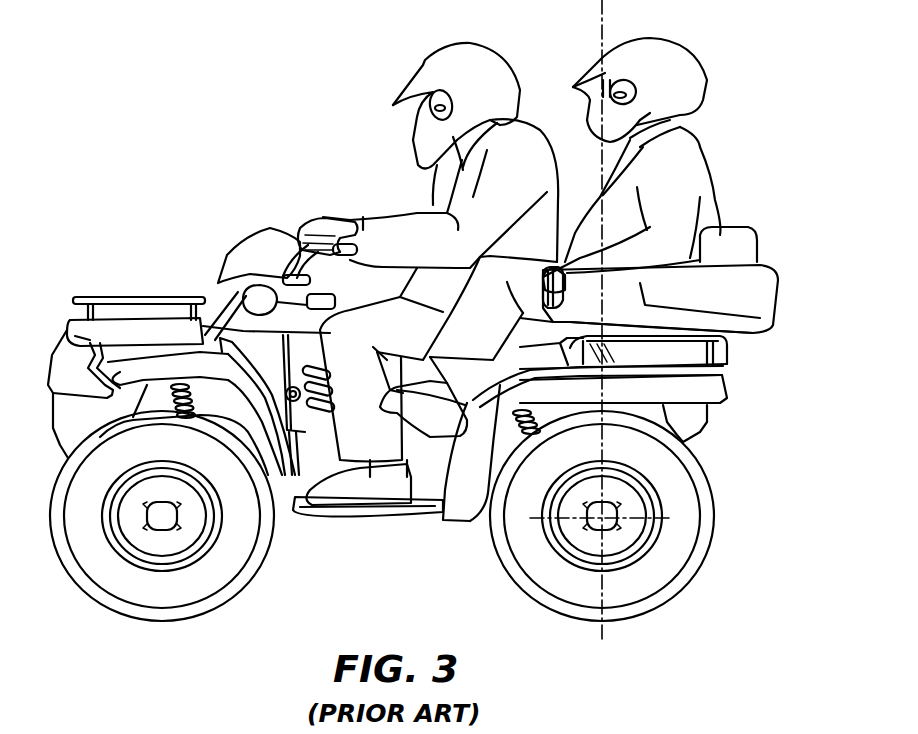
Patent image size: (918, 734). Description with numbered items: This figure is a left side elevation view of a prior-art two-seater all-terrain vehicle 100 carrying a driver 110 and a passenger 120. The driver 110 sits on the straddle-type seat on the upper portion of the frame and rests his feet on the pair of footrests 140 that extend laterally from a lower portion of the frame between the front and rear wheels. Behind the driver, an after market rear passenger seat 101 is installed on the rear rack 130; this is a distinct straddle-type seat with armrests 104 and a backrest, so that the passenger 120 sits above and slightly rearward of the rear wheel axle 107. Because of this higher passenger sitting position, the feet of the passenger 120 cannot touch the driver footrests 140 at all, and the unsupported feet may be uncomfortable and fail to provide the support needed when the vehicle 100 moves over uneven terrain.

The all-terrain vehicle 100 is at (134, 214).
The after market rear passenger seat 101 is at (760, 290).
The armrests 104 is at (780, 327).
The rear wheel axle 107 is at (603, 518).
The driver 110 is at (433, 195).
The passenger 120 is at (700, 147).
The rear rack 130 is at (720, 343).
The footrests 140 is at (367, 515).